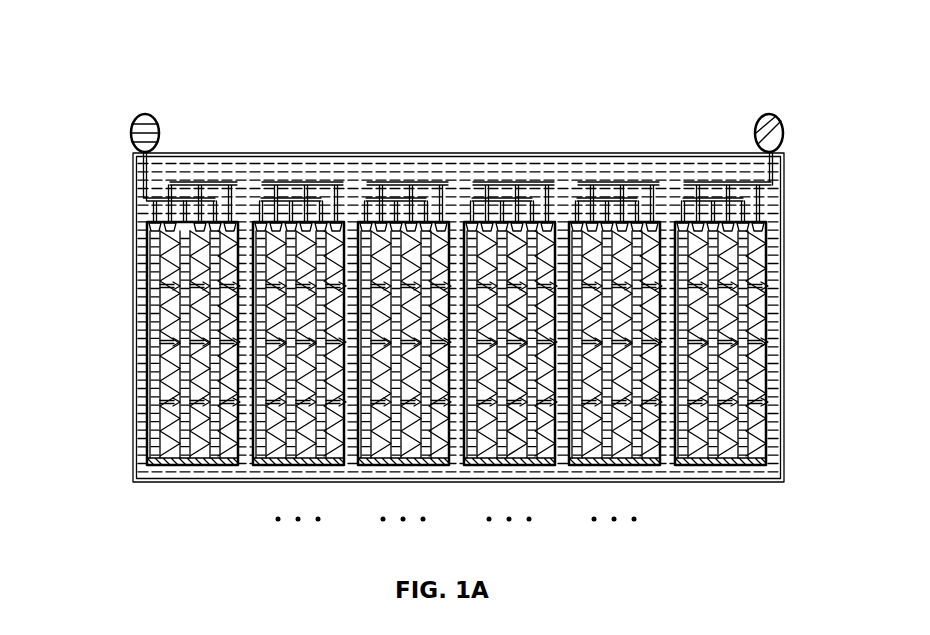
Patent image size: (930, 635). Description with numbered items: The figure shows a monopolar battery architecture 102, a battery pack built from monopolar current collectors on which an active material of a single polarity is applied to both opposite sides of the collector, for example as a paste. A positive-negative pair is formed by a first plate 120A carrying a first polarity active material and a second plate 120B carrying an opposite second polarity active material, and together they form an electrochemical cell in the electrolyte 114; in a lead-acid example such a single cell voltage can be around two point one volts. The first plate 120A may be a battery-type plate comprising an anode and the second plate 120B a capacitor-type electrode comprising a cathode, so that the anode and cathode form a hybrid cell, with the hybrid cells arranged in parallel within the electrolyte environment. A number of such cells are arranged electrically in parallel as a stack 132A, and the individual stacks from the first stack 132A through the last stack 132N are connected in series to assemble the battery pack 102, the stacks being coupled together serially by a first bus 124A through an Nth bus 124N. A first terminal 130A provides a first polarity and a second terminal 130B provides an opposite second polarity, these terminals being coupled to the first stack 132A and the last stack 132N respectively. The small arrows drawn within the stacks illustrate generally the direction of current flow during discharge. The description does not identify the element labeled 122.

The monopolar battery architecture 102 is at (144, 24).
The electrolyte 114 is at (190, 221).
The first plate 120A is at (104, 344).
The second plate 120B is at (114, 343).
The housing / enclosure 122 is at (530, 152).
The first bus 124A is at (262, 181).
The Nth bus 124N is at (680, 182).
The first terminal 130A is at (135, 117).
The second terminal 130B is at (779, 117).
The stack 132A is at (238, 505).
The last stack 132N is at (766, 505).